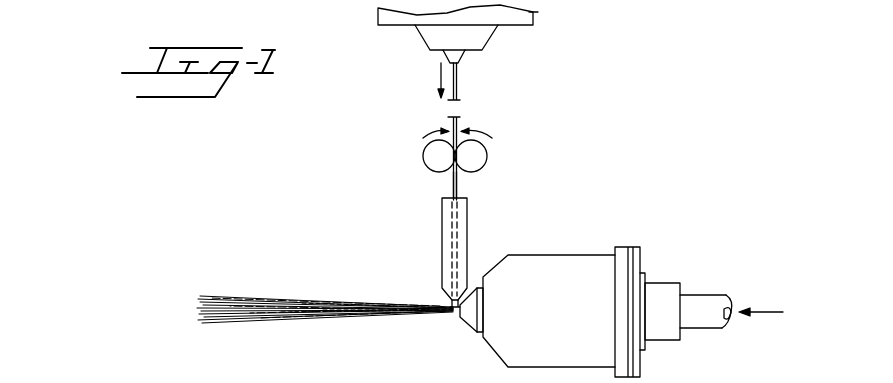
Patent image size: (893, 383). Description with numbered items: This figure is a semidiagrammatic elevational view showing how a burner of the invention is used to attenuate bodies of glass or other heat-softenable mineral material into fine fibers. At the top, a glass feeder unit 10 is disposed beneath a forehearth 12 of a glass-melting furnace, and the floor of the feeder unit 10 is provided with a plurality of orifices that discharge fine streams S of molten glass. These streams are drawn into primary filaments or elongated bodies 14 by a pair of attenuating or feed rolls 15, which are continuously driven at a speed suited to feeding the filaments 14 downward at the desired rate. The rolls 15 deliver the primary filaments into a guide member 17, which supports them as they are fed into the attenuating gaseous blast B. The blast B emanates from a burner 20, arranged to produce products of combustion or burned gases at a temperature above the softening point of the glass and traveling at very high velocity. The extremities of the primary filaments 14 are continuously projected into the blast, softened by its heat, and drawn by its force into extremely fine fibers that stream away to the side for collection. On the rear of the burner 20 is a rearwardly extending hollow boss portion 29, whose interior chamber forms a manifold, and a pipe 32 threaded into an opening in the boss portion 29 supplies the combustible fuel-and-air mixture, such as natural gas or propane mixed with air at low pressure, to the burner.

The glass feeder unit 10 is at (482, 40).
The forehearth 12 is at (378, 21).
The streams of molten glass S is at (458, 78).
The feed rolls 15 is at (427, 153).
The primary filaments 14 is at (453, 181).
The guide member 17 is at (443, 245).
The gaseous blast B is at (340, 300).
The burner 20 is at (551, 234).
The hollow boss portion 29 is at (660, 332).
The pipe 32 is at (698, 322).